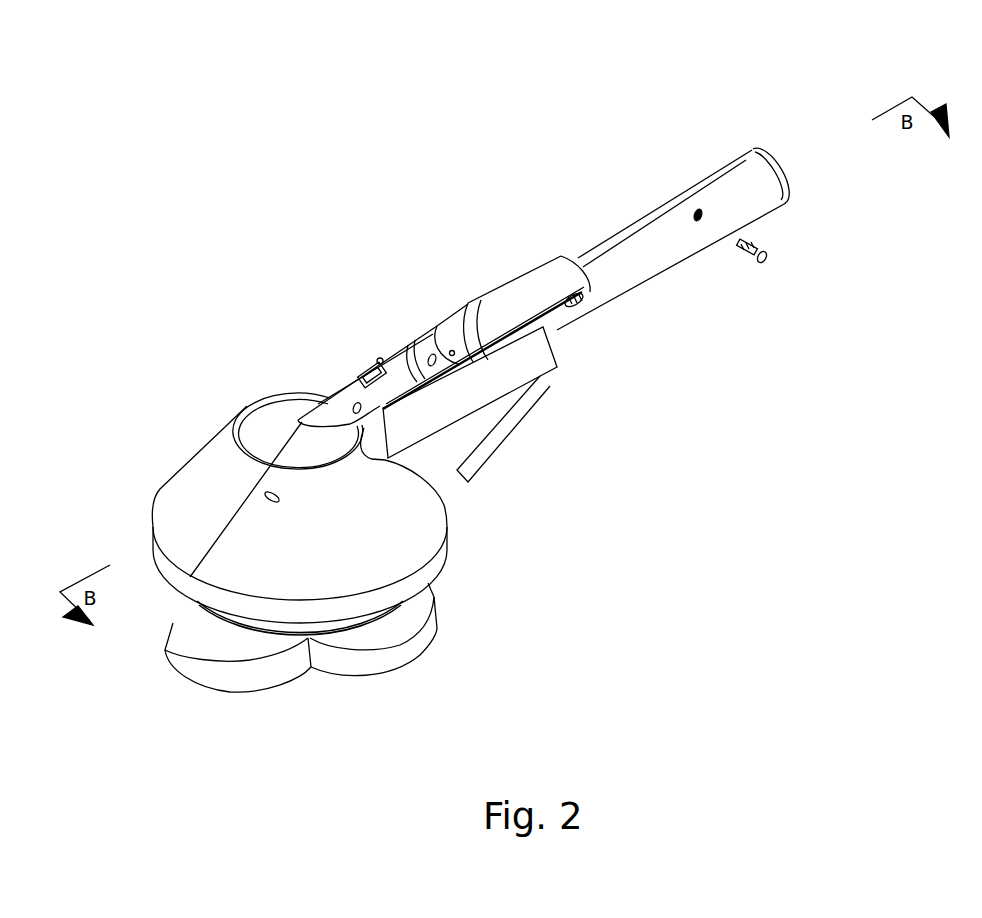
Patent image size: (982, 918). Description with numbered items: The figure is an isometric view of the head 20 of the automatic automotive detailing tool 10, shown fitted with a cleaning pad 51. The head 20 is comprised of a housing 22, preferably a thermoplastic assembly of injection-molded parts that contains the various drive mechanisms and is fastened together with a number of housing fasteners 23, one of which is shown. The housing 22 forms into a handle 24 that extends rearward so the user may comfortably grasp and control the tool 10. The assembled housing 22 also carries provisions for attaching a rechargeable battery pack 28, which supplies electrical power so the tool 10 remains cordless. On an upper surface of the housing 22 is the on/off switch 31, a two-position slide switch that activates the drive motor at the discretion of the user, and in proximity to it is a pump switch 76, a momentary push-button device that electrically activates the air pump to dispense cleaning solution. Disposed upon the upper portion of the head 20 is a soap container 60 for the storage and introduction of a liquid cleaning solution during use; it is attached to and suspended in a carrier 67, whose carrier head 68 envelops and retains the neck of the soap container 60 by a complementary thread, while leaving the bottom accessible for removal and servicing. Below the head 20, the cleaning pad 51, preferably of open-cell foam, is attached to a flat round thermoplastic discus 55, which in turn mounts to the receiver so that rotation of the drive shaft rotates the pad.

The automatic automotive detailing tool 10 is at (112, 172).
The head 20 is at (180, 490).
The housing 22 is at (263, 398).
The housing fastener 23 is at (773, 263).
The handle 24 is at (678, 197).
The battery pack 28 is at (509, 432).
The on/off switch 31 is at (372, 364).
The cleaning pad 51 is at (407, 648).
The discus 55 is at (228, 622).
The soap container 60 is at (503, 297).
The carrier 67 is at (583, 303).
The carrier head 68 is at (458, 323).
The pump switch 76 is at (380, 357).